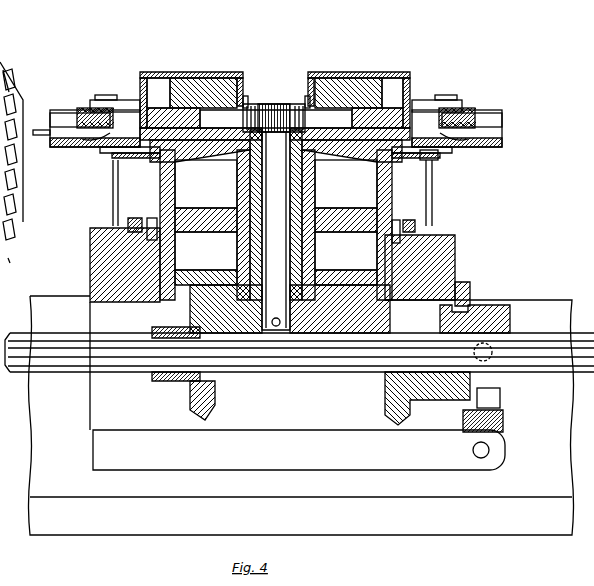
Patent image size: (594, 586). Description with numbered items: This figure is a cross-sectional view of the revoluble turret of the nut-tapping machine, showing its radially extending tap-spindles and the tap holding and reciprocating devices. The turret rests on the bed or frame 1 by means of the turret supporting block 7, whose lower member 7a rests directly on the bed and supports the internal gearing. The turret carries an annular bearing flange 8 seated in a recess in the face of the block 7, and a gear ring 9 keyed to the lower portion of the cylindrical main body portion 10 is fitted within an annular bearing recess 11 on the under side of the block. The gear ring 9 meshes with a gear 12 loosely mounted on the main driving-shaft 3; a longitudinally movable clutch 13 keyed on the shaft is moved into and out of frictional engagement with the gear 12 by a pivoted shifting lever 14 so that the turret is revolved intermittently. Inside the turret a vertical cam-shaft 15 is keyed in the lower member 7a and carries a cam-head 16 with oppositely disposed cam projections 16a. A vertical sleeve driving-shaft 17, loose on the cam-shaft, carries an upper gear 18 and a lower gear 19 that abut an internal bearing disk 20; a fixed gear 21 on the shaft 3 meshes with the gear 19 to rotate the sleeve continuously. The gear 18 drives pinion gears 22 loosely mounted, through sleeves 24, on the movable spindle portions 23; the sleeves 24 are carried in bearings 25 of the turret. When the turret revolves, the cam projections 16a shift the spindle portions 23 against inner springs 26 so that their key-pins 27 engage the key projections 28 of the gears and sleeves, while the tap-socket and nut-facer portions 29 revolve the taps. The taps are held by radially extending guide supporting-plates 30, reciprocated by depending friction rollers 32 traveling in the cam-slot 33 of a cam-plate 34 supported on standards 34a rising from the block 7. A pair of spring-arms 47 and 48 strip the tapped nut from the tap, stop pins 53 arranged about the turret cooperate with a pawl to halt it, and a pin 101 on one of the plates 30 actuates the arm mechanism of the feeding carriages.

The bed or frame 1 is at (42, 441).
The main driving-shaft 3 is at (17, 340).
The turret supporting-frame or block 7 is at (456, 250).
The lower part or member of the turret supporting-block 7a is at (470, 294).
The annular bearing flange 8 is at (400, 238).
The gear ring 9 is at (440, 273).
The cylindrical main body portion 10 is at (393, 190).
The annular bearing recess 11 is at (112, 262).
The gear 12 is at (386, 394).
The longitudinally movable clutch 13 is at (508, 317).
The shifting lever 14 is at (139, 440).
The vertical cam-shaft 15 is at (264, 240).
The cam-head 16 is at (274, 104).
The cam projections 16a is at (250, 104).
The vertical sleeve driving-shaft 17 is at (240, 182).
The upper horizontal gear 18 is at (330, 172).
The lower horizontal gear 19 is at (330, 278).
The internal bearing head or disk 20 is at (318, 216).
The fixed gear 21 is at (216, 397).
The pinion gears 22 is at (178, 72).
The longitudinally movable spindle portions 23 is at (239, 78).
The sleeves or bushings 24 is at (161, 128).
The bearings 25 is at (156, 108).
The inner springs 26 is at (172, 90).
The cross key-pins or key projections 27 is at (245, 96).
The key-pins or projections 28 is at (205, 78).
The tap-socket and nut-facer portions 29 is at (134, 108).
The guide supporting-plates 30 is at (58, 116).
The depending friction rollers 32 is at (426, 162).
The cam-slot 33 is at (115, 160).
The cam-plate 34 is at (104, 153).
The standards 34a is at (112, 202).
The spring-arm 47 is at (104, 95).
The spring-arm 48 is at (85, 110).
The stop pins 53 is at (410, 222).
The pin 101 is at (42, 136).